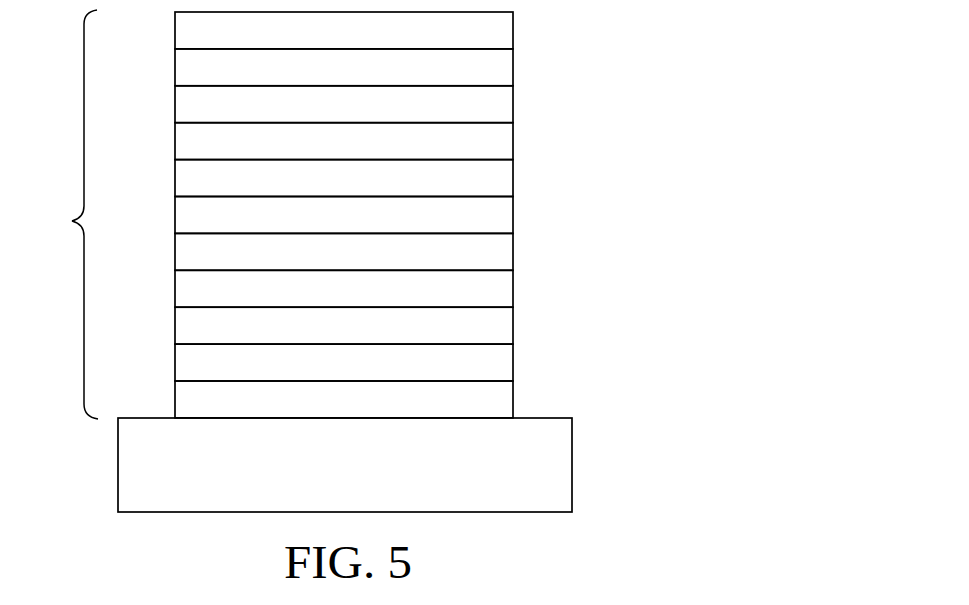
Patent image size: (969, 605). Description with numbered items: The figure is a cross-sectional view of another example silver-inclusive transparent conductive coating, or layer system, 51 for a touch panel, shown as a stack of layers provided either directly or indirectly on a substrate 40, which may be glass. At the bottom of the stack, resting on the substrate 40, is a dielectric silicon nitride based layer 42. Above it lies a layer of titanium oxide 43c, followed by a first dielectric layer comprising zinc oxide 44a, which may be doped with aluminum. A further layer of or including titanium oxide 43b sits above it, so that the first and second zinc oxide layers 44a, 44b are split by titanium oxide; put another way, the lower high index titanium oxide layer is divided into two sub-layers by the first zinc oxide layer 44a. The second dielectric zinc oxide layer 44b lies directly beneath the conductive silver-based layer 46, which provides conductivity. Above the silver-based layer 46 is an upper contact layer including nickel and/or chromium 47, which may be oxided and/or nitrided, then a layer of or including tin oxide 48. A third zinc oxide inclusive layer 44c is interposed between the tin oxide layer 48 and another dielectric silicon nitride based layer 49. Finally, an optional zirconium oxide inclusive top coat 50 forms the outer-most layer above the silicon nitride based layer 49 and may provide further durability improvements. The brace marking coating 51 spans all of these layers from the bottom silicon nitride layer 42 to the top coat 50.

The substrate 40 is at (572, 464).
The bottom dielectric silicon nitride based layer 42 is at (513, 400).
The titanium oxide layer 43b is at (513, 291).
The titanium oxide layer 43c is at (513, 365).
The first dielectric layer comprising zinc oxide 44a is at (513, 328).
The second dielectric layer comprising zinc oxide 44b is at (513, 254).
The third zinc oxide inclusive layer 44c is at (513, 106).
The conductive silver-based layer 46 is at (513, 217).
The upper contact layer including nickel and/or chromium 47 is at (513, 180).
The tin oxide layer 48 is at (513, 143).
The dielectric silicon nitride based layer 49 is at (513, 69).
The zirconium oxide inclusive top coat 50 is at (513, 33).
The transparent conductive coating 51 is at (68, 214).